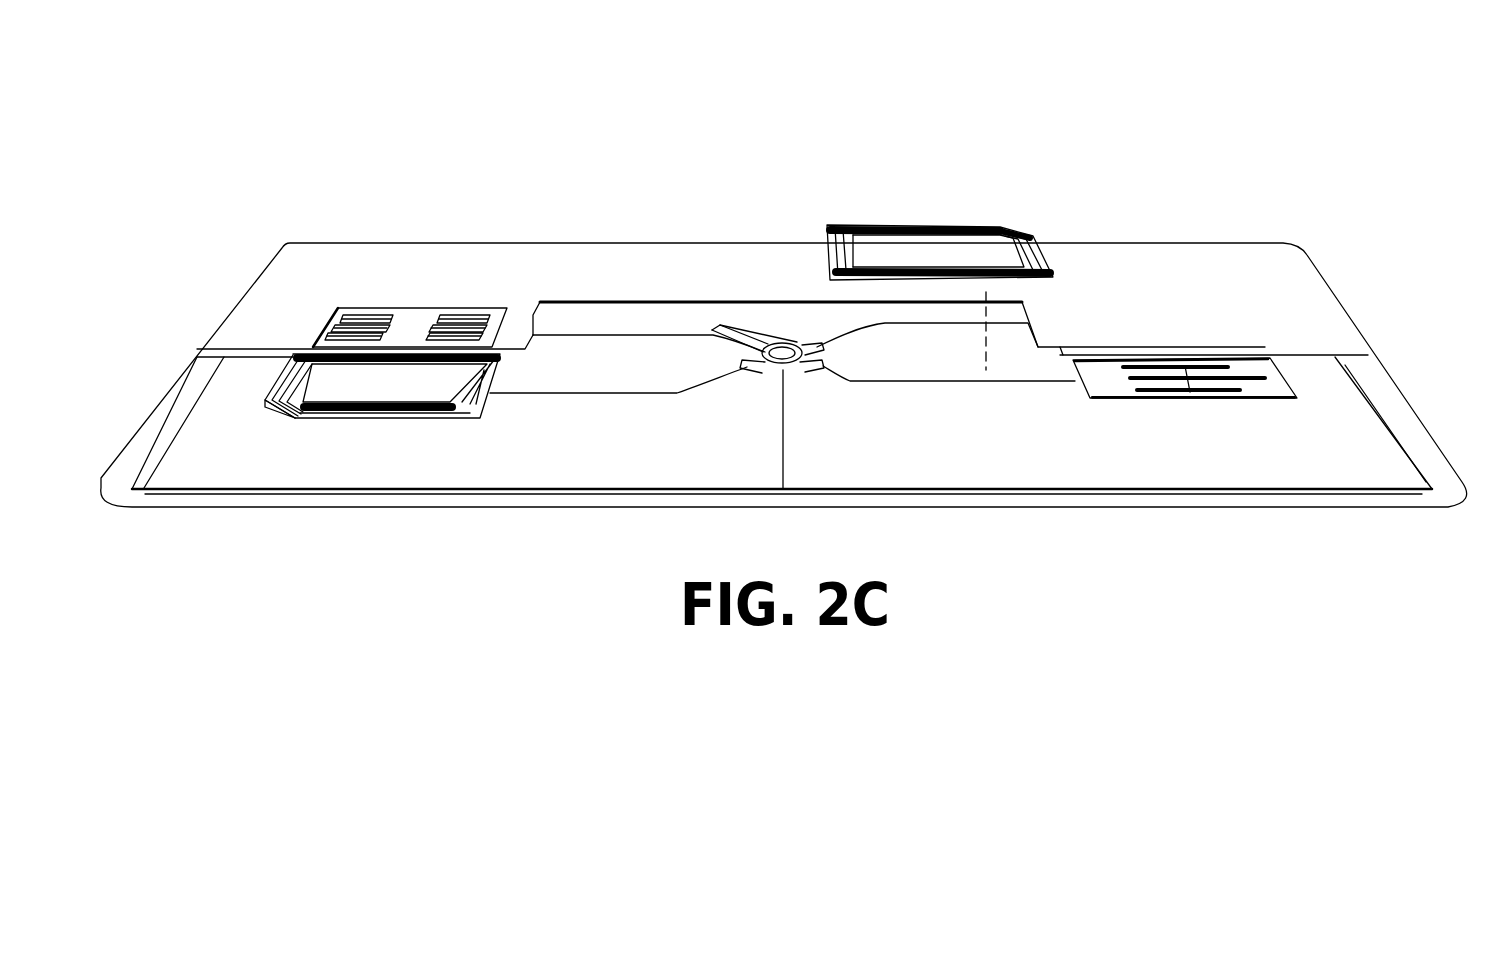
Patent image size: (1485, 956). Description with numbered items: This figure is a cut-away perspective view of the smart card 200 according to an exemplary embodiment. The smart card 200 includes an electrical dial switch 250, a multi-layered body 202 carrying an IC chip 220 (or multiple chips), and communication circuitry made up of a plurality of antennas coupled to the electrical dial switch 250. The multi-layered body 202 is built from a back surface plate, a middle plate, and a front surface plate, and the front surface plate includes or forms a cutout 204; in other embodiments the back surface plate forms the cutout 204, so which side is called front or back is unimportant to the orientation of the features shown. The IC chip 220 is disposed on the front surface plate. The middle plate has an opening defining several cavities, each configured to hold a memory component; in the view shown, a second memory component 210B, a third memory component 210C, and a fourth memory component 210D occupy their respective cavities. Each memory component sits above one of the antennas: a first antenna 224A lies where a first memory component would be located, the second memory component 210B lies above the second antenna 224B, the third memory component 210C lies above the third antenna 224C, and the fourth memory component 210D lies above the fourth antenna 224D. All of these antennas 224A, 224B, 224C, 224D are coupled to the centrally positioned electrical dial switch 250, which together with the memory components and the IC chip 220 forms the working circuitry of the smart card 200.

The smart card 200 is at (312, 146).
The multi-layered body 202 is at (1262, 243).
The cutout 204 is at (597, 302).
The second memory component 210B is at (284, 390).
The third memory component 210C is at (1243, 350).
The fourth memory component 210D is at (878, 225).
The IC chip 220 is at (330, 317).
The first antenna 224A is at (612, 337).
The second antenna 224B is at (263, 404).
The third antenna 224C is at (868, 326).
The fourth antenna 224D is at (1152, 402).
The electrical dial switch 250 is at (712, 328).